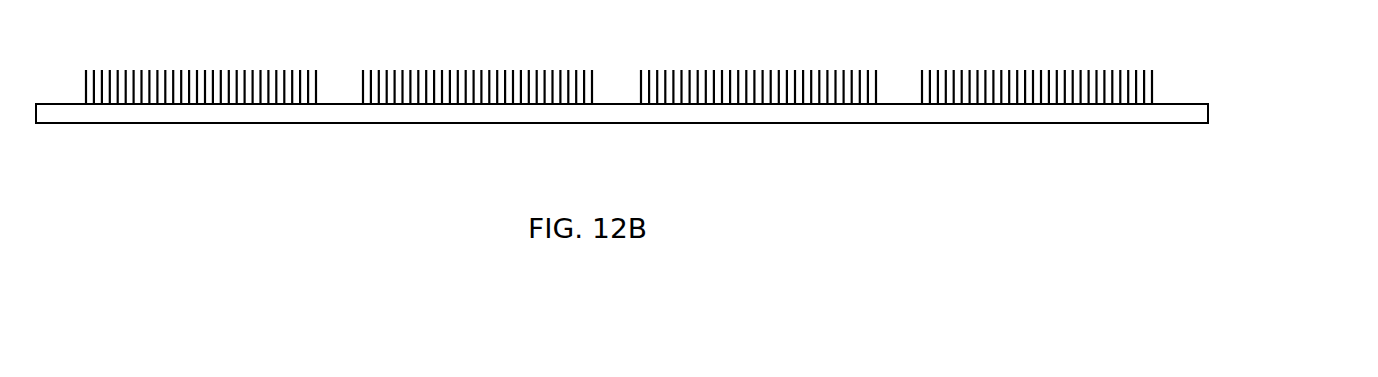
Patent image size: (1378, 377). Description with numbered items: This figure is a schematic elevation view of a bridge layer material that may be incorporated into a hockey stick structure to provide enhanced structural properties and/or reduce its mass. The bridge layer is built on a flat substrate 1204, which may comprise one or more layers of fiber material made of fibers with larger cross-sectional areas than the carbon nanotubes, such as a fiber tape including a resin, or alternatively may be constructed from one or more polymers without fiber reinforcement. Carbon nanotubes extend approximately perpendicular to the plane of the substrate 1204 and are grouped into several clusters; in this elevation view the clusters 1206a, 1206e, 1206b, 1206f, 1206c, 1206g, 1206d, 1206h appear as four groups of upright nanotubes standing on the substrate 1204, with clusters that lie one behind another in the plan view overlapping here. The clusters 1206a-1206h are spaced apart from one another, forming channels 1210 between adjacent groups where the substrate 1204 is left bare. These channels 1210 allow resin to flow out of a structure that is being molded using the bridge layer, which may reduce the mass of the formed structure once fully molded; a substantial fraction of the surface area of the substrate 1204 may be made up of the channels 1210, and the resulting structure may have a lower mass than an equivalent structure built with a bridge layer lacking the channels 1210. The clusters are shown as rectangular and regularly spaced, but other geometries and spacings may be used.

The substrate 1204 is at (1172, 118).
The cluster of carbon nanotubes 1206a is at (165, 70).
The cluster of carbon nanotubes 1206e is at (234, 77).
The cluster of carbon nanotubes 1206b is at (407, 70).
The cluster of carbon nanotubes 1206f is at (492, 75).
The cluster of carbon nanotubes 1206c is at (695, 70).
The cluster of carbon nanotubes 1206g is at (779, 75).
The cluster of carbon nanotubes 1206d is at (957, 70).
The cluster of carbon nanotubes 1206h is at (1049, 75).
The channels 1210 is at (340, 88).